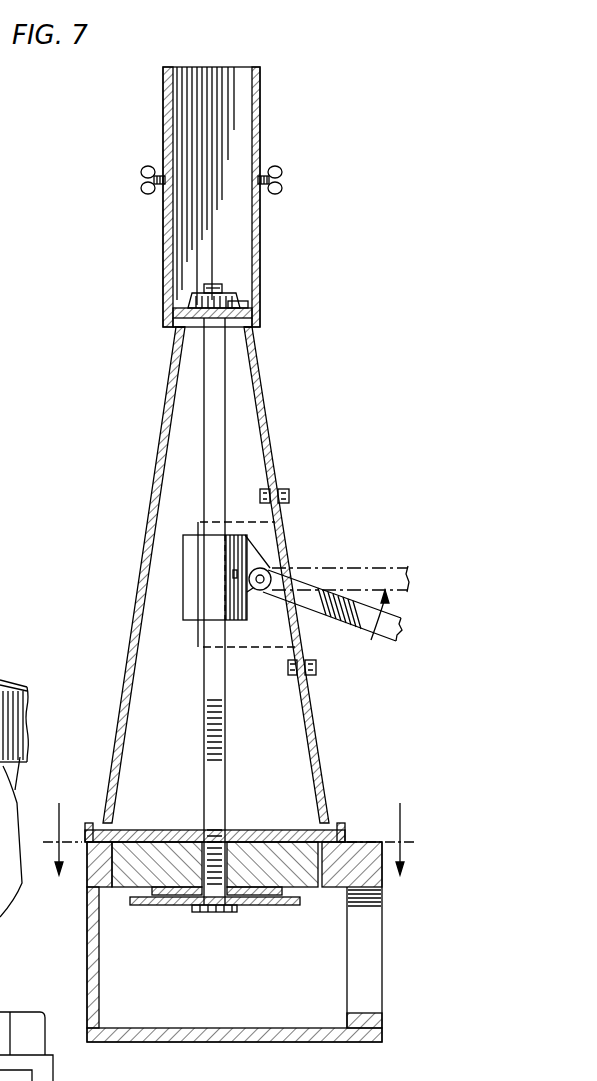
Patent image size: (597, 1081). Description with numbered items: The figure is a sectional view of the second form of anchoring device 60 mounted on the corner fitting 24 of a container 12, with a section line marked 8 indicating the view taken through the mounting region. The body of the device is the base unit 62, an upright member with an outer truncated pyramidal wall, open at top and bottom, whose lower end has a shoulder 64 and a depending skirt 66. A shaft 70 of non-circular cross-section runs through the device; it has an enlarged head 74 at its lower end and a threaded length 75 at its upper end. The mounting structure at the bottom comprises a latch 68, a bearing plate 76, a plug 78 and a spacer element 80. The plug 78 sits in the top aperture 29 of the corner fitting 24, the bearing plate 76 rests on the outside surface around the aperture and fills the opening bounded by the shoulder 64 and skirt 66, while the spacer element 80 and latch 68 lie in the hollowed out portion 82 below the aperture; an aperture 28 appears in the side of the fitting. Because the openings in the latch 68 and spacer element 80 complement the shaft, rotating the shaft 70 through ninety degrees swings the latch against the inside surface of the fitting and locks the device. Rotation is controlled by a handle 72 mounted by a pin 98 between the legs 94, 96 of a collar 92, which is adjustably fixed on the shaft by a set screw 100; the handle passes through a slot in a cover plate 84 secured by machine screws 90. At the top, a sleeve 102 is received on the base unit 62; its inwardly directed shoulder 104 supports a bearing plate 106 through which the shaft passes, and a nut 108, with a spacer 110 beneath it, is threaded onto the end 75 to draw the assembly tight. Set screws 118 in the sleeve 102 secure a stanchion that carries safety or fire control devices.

The section line 8- 8 is at (229, 850).
The container 12 is at (10, 797).
The corner fitting 24 is at (227, 942).
The aperture 28 is at (370, 960).
The top aperture 29 is at (322, 865).
The anchoring device 60 is at (134, 541).
The base unit 62 is at (266, 435).
The shoulder 64 is at (335, 829).
The skirt 66 is at (346, 832).
The latch 68 is at (134, 905).
The shaft 70 is at (206, 756).
The handle 72 is at (374, 636).
The enlarged head 74 is at (222, 912).
The threaded length 75 is at (212, 285).
The bearing plate 76 is at (150, 830).
The plug 78 is at (260, 845).
The spacer element 80 is at (184, 896).
The hollowed out portion 82 is at (94, 982).
The cover plate 84 is at (287, 526).
The machine screws 90 is at (288, 492).
The collar 92 is at (188, 542).
The leg 94 is at (312, 563).
The leg 96 is at (255, 562).
The pin 98 is at (261, 592).
The set screw 100 is at (235, 574).
The sleeve 102 is at (262, 218).
The shoulder 104 is at (176, 332).
The bearing plate 106 is at (250, 313).
The nut 108 is at (190, 300).
The spacer 110 is at (240, 300).
The set screw 118 is at (141, 180).